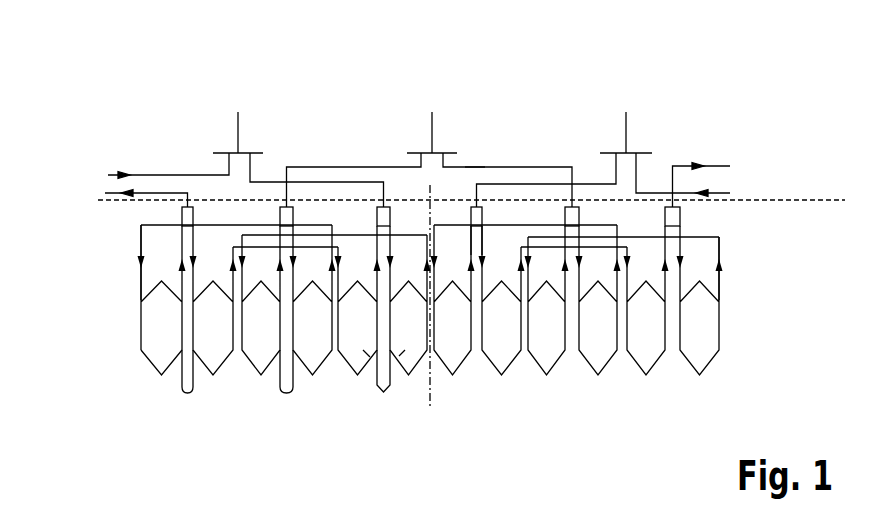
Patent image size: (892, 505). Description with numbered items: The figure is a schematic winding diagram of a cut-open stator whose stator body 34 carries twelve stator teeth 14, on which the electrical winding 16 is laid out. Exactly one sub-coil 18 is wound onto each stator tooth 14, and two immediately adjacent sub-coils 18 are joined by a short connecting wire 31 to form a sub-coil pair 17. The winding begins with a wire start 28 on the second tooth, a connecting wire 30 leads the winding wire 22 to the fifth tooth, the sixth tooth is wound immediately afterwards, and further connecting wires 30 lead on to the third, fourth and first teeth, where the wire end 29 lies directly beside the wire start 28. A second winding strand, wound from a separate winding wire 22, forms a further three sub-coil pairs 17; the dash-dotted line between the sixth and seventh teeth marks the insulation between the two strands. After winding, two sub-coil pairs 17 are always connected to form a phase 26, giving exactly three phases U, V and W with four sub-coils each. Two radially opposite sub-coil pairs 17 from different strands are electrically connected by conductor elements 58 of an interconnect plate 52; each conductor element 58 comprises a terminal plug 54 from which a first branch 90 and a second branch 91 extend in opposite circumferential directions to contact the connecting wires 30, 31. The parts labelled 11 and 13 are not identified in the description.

The battery module / cell stack 11 is at (128, 328).
The second cell group 13 is at (563, 410).
The stator teeth 14 is at (384, 385).
The electrical winding 16 is at (84, 262).
The winding wire 22 is at (140, 283).
The sub-coil pair 17 is at (237, 384).
The sub-coil 18 is at (153, 356).
The phase 26 is at (235, 86).
The wire start 28 is at (482, 222).
The wire end 29 is at (471, 222).
The connecting wire 30 is at (338, 222).
The short connecting wire 31 is at (190, 205).
The stator body 34 is at (745, 294).
The interconnect plate 52 is at (752, 178).
The terminal plug 54 is at (430, 138).
The conductor element 58 is at (480, 148).
The first branch 90 is at (363, 166).
The second branch 91 is at (533, 165).